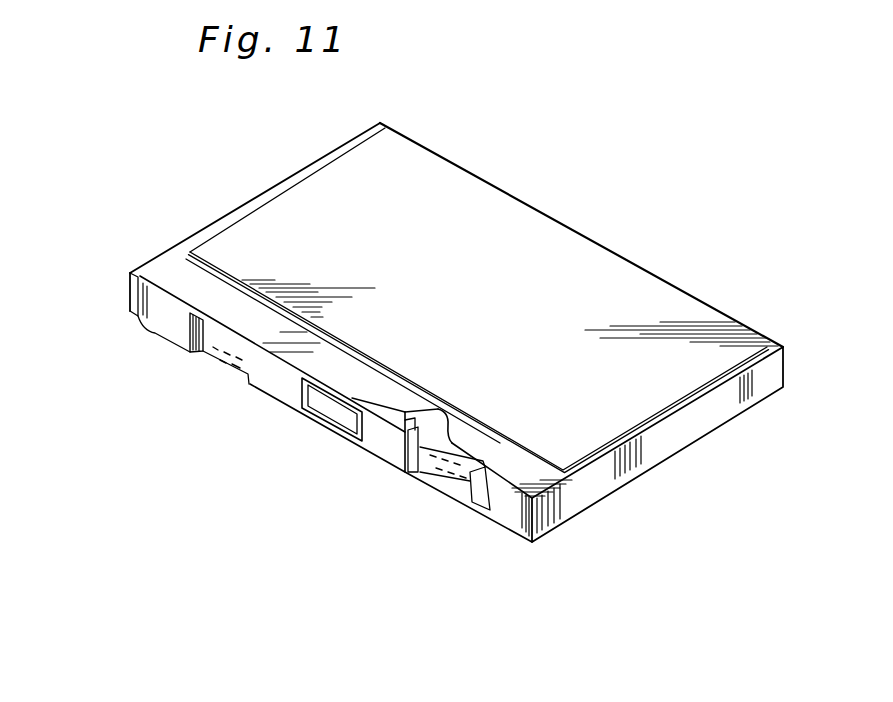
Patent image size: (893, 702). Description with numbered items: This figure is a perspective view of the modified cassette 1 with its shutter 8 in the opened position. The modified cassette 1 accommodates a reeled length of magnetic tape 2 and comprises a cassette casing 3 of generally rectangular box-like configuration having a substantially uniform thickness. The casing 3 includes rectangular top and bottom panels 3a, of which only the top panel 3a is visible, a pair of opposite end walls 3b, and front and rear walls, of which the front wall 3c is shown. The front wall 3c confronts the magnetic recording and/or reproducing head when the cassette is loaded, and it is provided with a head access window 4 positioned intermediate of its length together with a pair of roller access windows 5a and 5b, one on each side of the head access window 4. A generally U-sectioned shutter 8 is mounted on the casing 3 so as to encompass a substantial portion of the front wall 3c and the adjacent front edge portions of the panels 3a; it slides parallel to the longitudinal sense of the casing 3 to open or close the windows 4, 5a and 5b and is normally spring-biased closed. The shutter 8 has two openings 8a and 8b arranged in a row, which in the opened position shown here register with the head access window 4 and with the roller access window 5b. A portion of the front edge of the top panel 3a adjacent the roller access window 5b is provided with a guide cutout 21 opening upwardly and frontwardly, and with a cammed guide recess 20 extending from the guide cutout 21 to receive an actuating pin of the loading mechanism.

The modified cassette 1 is at (689, 290).
The magnetic tape 2 is at (453, 473).
The cassette casing 3 is at (503, 227).
The top panel 3a is at (577, 267).
The end wall 3b is at (605, 487).
The front wall 3c is at (160, 313).
The head access window 4 is at (320, 423).
The roller access window 5a is at (463, 500).
The roller access window 5b is at (223, 358).
The shutter 8 is at (403, 408).
The shutter opening 8a is at (318, 398).
The shutter opening 8b is at (178, 336).
The cammed guide recess 20 is at (413, 445).
The guide cutout 21 is at (488, 510).